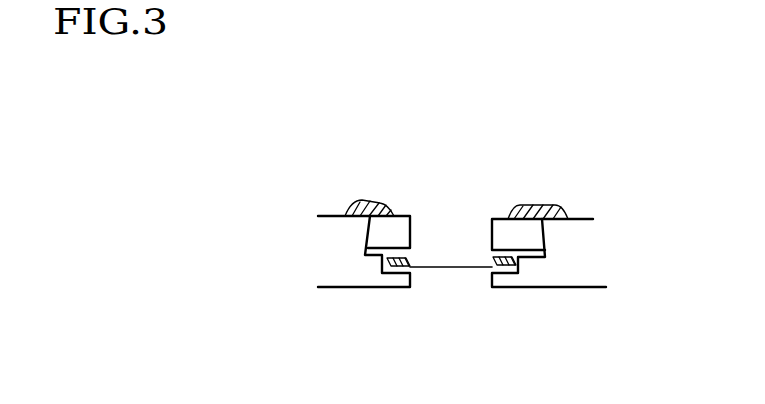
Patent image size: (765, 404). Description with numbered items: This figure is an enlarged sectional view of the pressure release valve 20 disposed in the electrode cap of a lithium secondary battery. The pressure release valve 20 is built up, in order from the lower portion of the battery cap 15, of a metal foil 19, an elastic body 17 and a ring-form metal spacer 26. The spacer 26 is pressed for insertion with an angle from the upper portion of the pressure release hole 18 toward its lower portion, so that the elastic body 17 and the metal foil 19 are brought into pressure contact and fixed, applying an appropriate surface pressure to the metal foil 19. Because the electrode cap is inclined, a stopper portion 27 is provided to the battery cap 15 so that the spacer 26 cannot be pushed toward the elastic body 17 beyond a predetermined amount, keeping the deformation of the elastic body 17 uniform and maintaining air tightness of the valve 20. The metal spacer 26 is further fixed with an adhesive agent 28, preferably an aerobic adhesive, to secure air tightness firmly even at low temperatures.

The battery cap 15 is at (327, 249).
The elastic body 17 is at (414, 250).
The pressure release hole 18 is at (478, 294).
The metal foil 19 is at (429, 279).
The pressure release valve 20 is at (509, 118).
The ring-form metal spacer 26 is at (390, 226).
The stopper portion 27 is at (534, 268).
The adhesive agent 28 is at (344, 213).